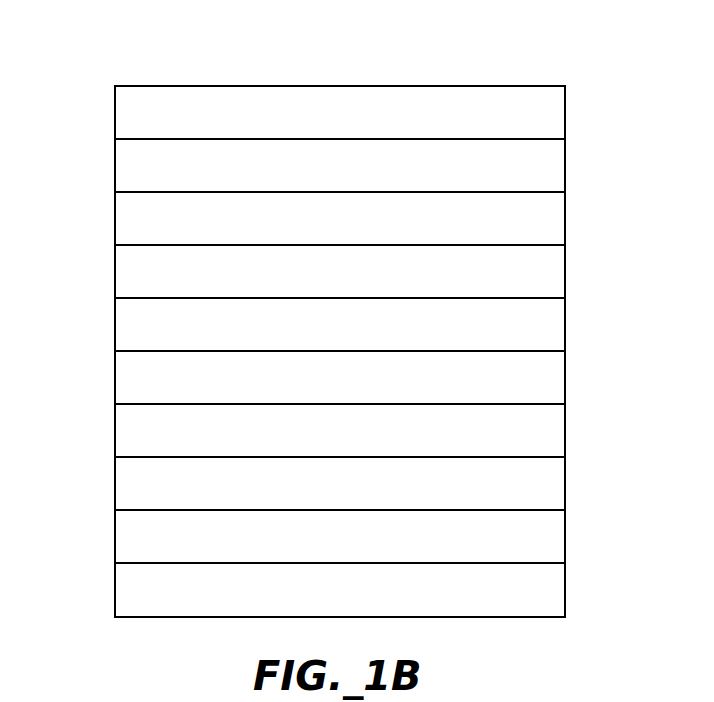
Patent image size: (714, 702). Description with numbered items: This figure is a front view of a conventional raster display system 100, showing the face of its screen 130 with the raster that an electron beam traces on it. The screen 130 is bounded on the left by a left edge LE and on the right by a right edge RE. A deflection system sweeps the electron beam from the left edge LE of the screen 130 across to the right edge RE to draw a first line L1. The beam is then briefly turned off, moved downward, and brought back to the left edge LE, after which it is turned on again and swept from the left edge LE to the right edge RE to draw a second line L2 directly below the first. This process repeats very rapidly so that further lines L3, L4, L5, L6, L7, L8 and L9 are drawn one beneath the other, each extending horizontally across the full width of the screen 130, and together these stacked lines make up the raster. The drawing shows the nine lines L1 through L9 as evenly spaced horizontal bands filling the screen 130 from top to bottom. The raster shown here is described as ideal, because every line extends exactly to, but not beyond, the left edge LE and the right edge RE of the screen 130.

The raster display system 100 is at (308, 72).
The screen 130 is at (512, 97).
The left edge LE is at (115, 101).
The right edge RE is at (566, 165).
The first line L1 is at (132, 139).
The second line L2 is at (132, 192).
The third line L3 is at (132, 245).
The fourth line L4 is at (132, 298).
The fifth line L5 is at (132, 351).
The sixth line L6 is at (132, 404).
The seventh line L7 is at (132, 457).
The eighth line L8 is at (132, 510).
The ninth line L9 is at (132, 563).